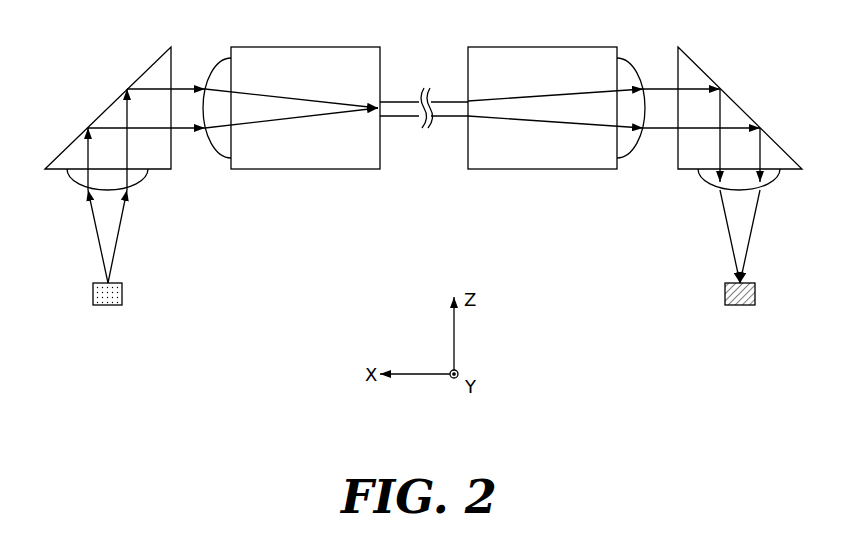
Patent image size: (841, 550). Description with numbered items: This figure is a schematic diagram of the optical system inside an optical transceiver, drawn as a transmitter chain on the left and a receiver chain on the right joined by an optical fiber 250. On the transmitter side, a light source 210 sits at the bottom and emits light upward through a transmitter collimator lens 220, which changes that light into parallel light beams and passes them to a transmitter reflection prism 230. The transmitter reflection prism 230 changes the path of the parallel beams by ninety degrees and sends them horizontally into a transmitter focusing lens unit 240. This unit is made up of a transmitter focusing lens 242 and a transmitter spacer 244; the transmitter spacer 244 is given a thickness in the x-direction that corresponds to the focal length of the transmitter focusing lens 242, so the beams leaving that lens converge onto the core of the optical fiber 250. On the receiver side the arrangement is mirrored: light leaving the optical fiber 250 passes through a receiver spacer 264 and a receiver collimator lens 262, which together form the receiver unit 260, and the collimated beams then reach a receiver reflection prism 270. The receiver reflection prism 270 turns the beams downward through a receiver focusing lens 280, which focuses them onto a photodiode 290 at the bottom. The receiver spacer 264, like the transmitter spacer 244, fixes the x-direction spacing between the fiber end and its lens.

The light source 210 is at (93, 295).
The transmitter collimator lens 220 is at (70, 178).
The transmitter reflection prism 230 is at (104, 112).
The transmitter focusing lens unit 240 is at (283, 155).
The transmitter focusing lens 242 is at (217, 160).
The transmitter spacer 244 is at (187, 221).
The optical fiber 250 is at (447, 100).
The receiver focusing lens unit 260 is at (562, 155).
The receiver collimator lens 262 is at (635, 141).
The receiver spacer 264 is at (571, 170).
The receiver reflection prism 270 is at (743, 109).
The receiver focusing lens 280 is at (778, 180).
The photodiode 290 is at (756, 295).